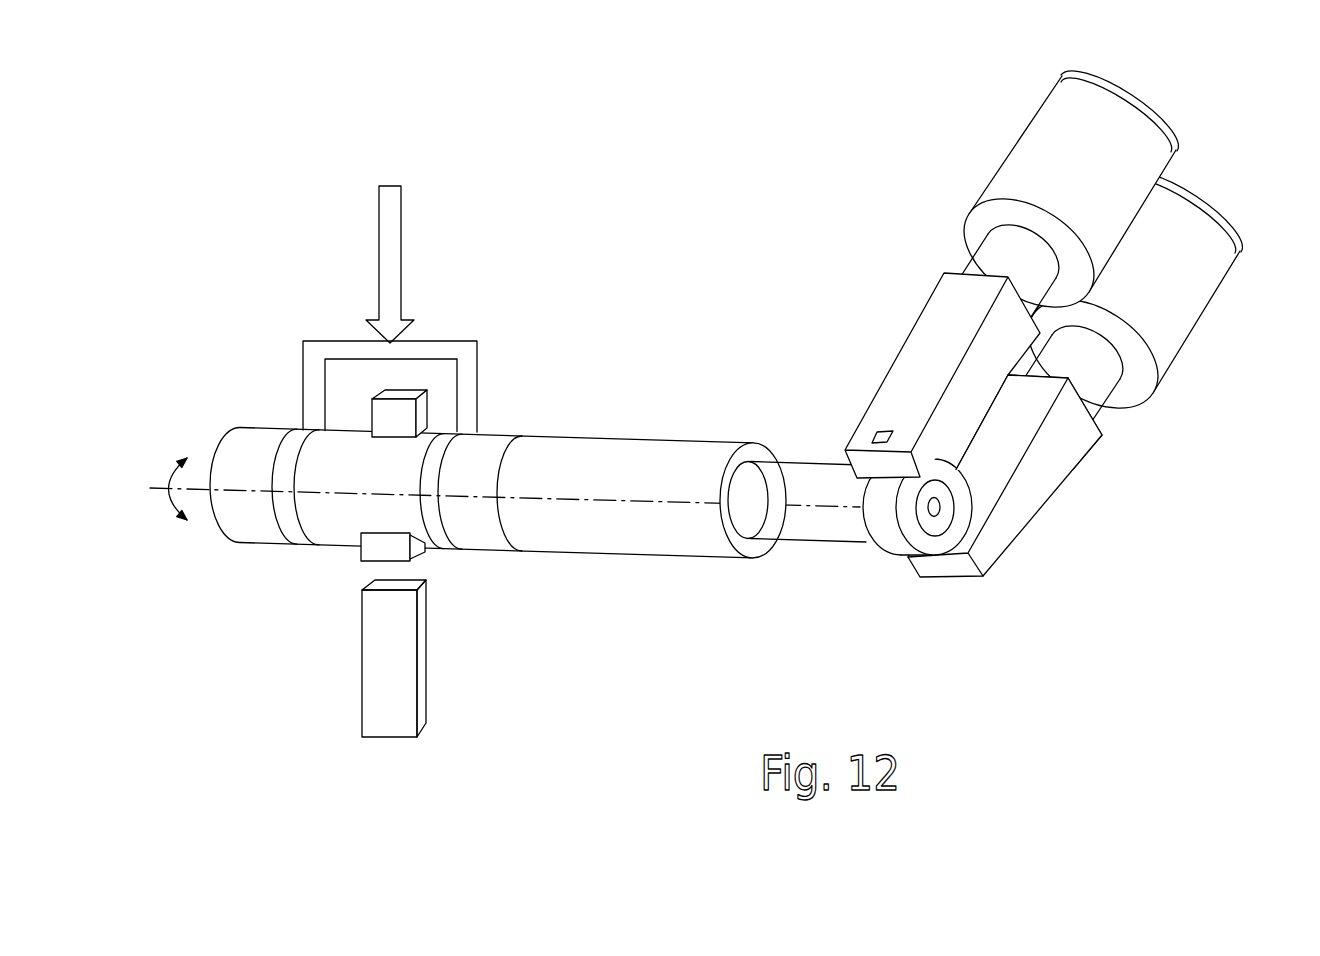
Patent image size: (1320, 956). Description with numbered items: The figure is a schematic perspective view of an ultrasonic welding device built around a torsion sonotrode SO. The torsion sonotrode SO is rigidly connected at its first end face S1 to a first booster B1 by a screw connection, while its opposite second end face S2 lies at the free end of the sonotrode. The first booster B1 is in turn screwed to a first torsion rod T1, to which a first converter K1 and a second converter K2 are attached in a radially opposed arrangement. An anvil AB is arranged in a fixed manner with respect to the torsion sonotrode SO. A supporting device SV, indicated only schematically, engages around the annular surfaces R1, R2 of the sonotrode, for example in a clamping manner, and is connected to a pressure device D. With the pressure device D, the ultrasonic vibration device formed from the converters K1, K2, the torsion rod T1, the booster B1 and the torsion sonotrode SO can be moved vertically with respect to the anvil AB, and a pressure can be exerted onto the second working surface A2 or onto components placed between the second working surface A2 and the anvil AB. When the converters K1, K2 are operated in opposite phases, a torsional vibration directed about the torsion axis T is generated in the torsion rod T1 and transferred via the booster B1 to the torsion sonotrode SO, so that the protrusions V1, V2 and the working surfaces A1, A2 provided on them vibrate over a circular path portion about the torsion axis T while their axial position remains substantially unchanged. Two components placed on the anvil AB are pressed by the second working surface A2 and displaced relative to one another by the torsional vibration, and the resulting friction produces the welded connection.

The pressure device D is at (385, 210).
The first working surface A1 is at (407, 397).
The supporting device SV is at (320, 350).
The first protrusion V1 is at (423, 408).
The first booster B1 is at (617, 462).
The first converter K1 is at (1032, 158).
The second converter K2 is at (1187, 290).
The second end face S2 is at (218, 520).
The second annular surface R2 is at (297, 543).
The second protrusion V2 is at (373, 557).
The second working surface A2 is at (405, 561).
The first annular surface R1 is at (455, 547).
The first end face S1 is at (522, 550).
The torsion axis T is at (662, 507).
The first torsion rod T1 is at (820, 508).
The torsion sonotrode SO is at (282, 613).
The anvil AB is at (394, 713).